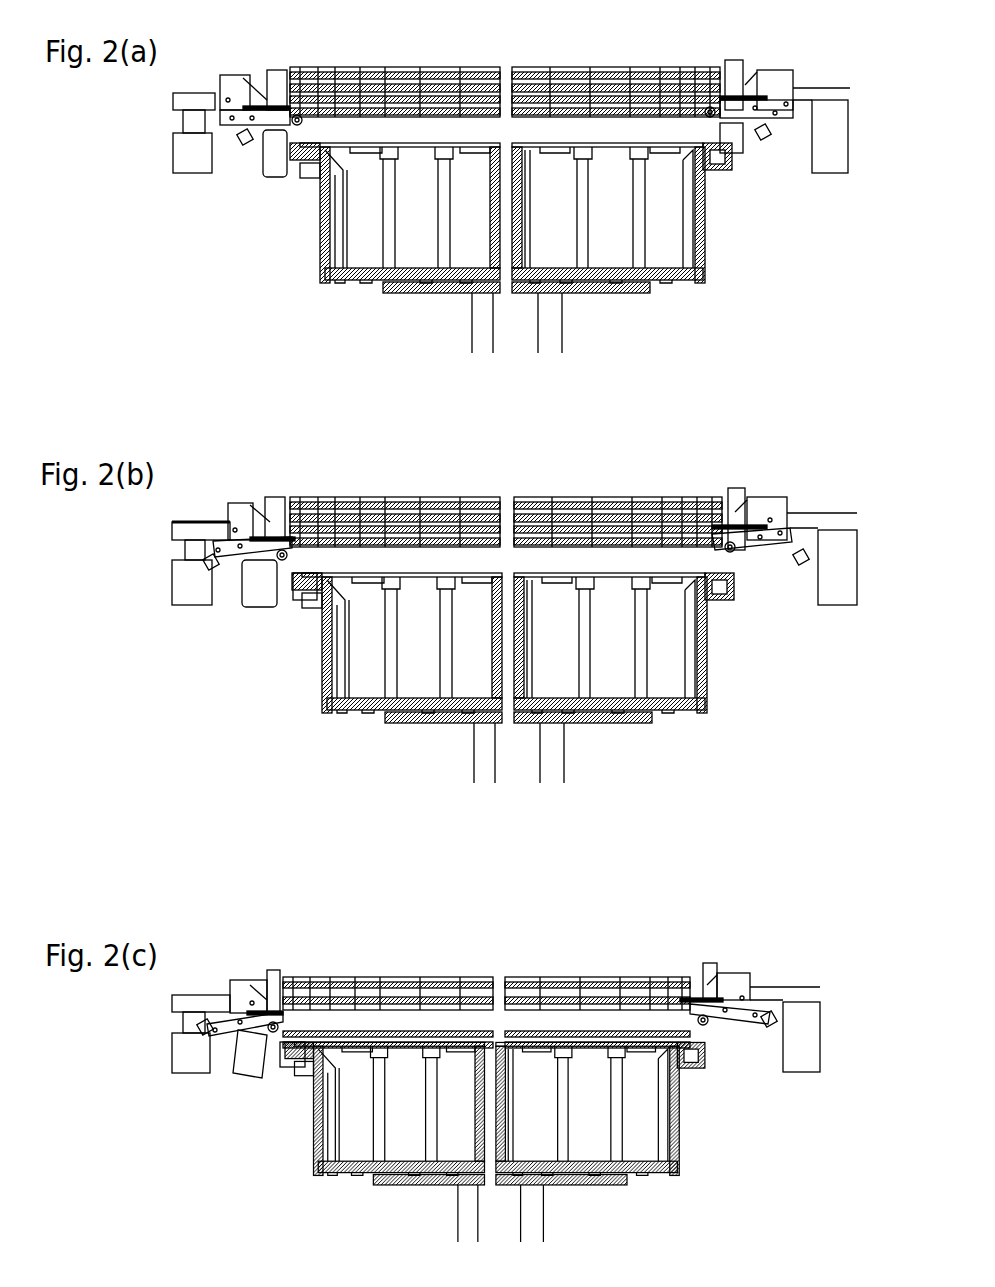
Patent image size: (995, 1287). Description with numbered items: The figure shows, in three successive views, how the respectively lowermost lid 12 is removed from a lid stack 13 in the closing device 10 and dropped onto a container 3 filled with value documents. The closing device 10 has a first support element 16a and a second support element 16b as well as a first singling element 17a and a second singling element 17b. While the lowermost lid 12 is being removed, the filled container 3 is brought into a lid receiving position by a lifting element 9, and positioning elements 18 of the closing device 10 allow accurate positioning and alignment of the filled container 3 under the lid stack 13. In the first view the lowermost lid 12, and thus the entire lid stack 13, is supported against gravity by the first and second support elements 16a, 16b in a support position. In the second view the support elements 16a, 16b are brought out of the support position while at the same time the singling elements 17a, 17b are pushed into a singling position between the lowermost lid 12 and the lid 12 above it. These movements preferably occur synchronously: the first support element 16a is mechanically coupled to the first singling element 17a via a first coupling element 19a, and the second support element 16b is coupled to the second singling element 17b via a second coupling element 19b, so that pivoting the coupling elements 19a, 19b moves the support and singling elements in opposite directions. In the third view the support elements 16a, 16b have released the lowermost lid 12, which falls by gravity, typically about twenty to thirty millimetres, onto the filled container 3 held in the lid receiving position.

In FIG. 2A, the container 3 is at (702, 248).
In FIG. 2B, the container 3 is at (708, 693).
In FIG. 2C, the container 3 is at (680, 1145).
In FIG. 2A, the lifting element 9 is at (550, 318).
In FIG. 2B, the lifting element 9 is at (552, 757).
In FIG. 2C, the lifting element 9 is at (535, 1203).
In FIG. 2A, the closing device 10 is at (777, 224).
In FIG. 2B, the closing device 10 is at (778, 670).
In FIG. 2C, the closing device 10 is at (756, 1113).
In FIG. 2A, the lid 12 is at (403, 72).
In FIG. 2B, the lid 12 is at (403, 502).
In FIG. 2C, the lid 12 is at (382, 979).
In FIG. 2A, the lid stack 13 is at (610, 54).
In FIG. 2B, the lid stack 13 is at (624, 494).
In FIG. 2C, the lid stack 13 is at (591, 969).
In FIG. 2A, the first support element 16a is at (303, 122).
In FIG. 2B, the first support element 16a is at (282, 561).
In FIG. 2C, the first support element 16a is at (276, 1033).
In FIG. 2A, the second support element 16b is at (706, 115).
In FIG. 2B, the second support element 16b is at (736, 553).
In FIG. 2C, the second support element 16b is at (705, 1026).
In FIG. 2A, the first singling element 17a is at (250, 106).
In FIG. 2B, the first singling element 17a is at (253, 537).
In FIG. 2C, the first singling element 17a is at (262, 1011).
In FIG. 2A, the second singling element 17b is at (723, 96).
In FIG. 2B, the second singling element 17b is at (730, 525).
In FIG. 2C, the second singling element 17b is at (698, 998).
In FIG. 2A, the positioning element 18 is at (280, 175).
In FIG. 2B, the positioning element 18 is at (267, 608).
In FIG. 2C, the positioning element 18 is at (258, 1078).
In FIG. 2A, the first coupling element 19a is at (239, 142).
In FIG. 2B, the first coupling element 19a is at (213, 568).
In FIG. 2C, the first coupling element 19a is at (206, 1033).
In FIG. 2A, the second coupling element 19b is at (768, 140).
In FIG. 2B, the second coupling element 19b is at (800, 560).
In FIG. 2C, the second coupling element 19b is at (768, 1024).